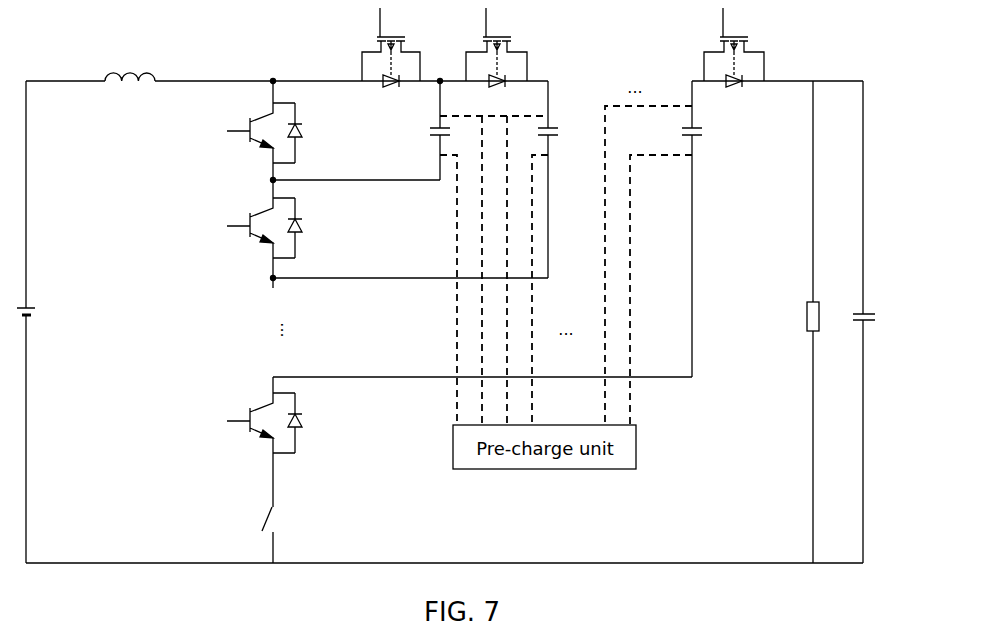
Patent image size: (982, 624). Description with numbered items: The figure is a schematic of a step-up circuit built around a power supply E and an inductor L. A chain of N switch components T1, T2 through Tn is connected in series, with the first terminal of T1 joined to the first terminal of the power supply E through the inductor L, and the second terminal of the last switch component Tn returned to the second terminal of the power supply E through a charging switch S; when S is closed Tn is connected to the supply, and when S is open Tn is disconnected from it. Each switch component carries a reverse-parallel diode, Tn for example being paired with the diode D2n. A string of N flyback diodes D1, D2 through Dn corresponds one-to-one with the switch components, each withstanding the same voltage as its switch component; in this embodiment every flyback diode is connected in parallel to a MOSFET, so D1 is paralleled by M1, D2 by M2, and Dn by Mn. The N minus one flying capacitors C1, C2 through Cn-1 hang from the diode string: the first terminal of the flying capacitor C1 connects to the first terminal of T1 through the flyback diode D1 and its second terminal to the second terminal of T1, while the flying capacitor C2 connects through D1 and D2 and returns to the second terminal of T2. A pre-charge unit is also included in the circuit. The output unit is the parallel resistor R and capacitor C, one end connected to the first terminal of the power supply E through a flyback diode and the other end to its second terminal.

The inductor L is at (120, 66).
The power supply E is at (39, 321).
The first switch component T1 is at (250, 133).
The second switch component T2 is at (250, 228).
The Nth switch component Tn is at (250, 423).
The diode D2n is at (320, 423).
The MOSFET M1 is at (391, 44).
The MOSFET M2 is at (496, 44).
The MOSFET Mn is at (734, 44).
The first flyback diode D1 is at (391, 93).
The second flyback diode D2 is at (494, 93).
The Nth flyback diode Dn is at (734, 93).
The flying capacitor C1 is at (426, 130).
The flying capacitor C2 is at (563, 179).
The (n-1)-th capacitor Cn-1 is at (716, 229).
The resistor R is at (825, 316).
The capacitor C is at (879, 320).
The charging switch S is at (302, 519).